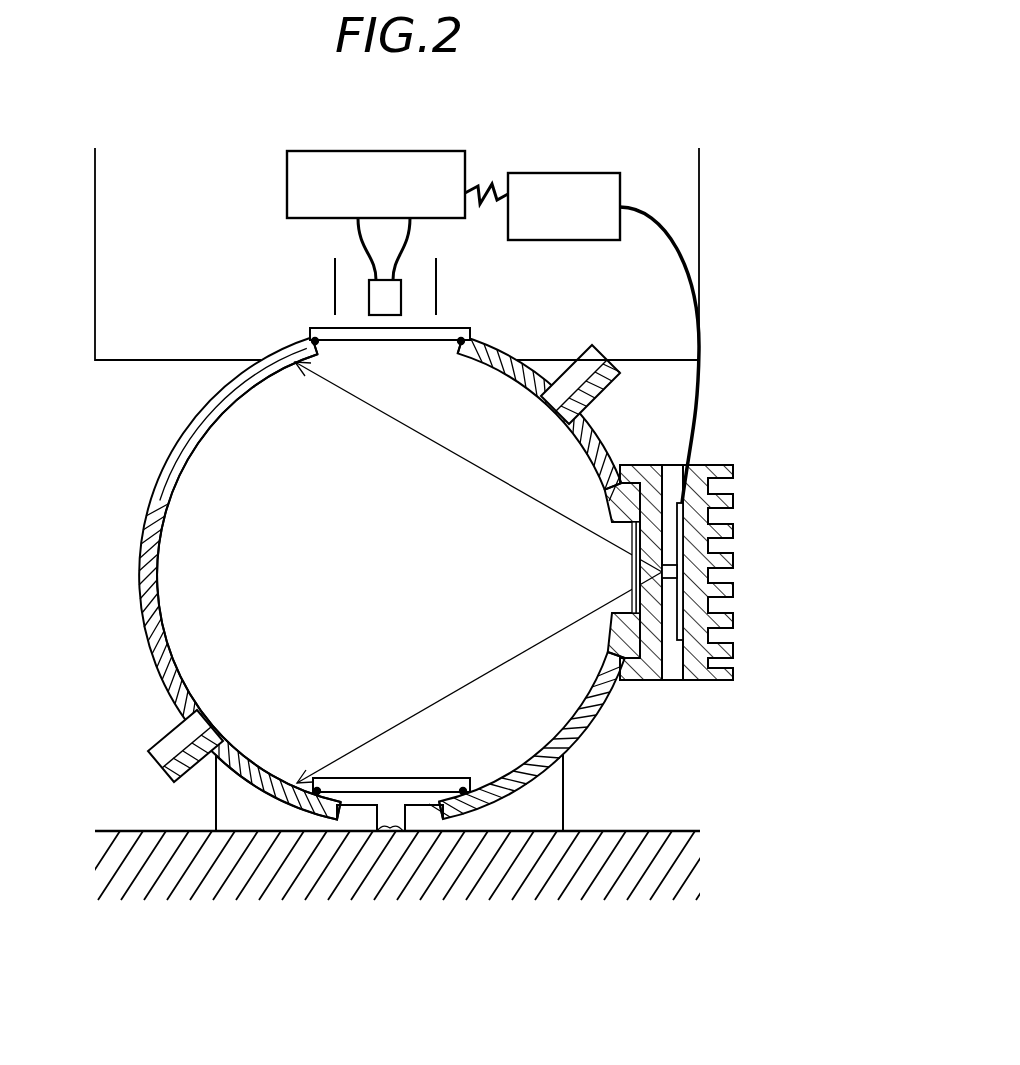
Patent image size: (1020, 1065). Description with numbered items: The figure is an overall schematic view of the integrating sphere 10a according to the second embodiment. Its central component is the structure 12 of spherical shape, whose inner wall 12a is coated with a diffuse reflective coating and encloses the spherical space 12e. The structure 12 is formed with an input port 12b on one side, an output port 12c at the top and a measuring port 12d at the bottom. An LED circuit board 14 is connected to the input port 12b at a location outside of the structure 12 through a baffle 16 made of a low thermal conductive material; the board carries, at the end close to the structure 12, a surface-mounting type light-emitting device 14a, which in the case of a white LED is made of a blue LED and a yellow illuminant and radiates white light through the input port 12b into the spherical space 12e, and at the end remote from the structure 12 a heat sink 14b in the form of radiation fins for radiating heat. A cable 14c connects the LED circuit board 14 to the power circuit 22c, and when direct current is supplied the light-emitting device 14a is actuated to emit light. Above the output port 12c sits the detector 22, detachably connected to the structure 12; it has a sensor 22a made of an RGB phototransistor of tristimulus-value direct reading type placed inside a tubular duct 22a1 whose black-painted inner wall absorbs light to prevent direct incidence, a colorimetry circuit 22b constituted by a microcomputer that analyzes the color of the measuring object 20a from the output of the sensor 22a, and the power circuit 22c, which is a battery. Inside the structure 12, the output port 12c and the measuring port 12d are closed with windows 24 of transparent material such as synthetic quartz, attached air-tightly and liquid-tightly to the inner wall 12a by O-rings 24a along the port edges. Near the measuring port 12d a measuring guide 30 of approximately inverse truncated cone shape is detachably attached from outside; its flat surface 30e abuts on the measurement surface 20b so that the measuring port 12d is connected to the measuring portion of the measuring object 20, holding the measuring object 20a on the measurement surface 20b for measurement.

The integrating sphere 10a is at (622, 422).
The structure 12 is at (150, 468).
The inner wall 12a is at (165, 575).
The input port 12b is at (620, 568).
The output port 12c is at (402, 355).
The measuring port 12d is at (425, 780).
The spherical space 12e is at (478, 572).
The LED circuit board 14 is at (680, 530).
The light-emitting device 14a is at (673, 571).
The heat sink 14b is at (700, 683).
The cable 14c is at (700, 450).
The baffle 16 is at (628, 465).
The measuring object 20 is at (408, 865).
The measuring object 20a is at (383, 833).
The measurement surface 20b is at (600, 831).
The detector 22 is at (702, 262).
The sensor 22a is at (385, 318).
The tubular duct 22a1 is at (333, 290).
The colorimetry circuit 22b is at (430, 151).
The power circuit 22c is at (558, 173).
The windows 24 is at (403, 342).
The O-rings 24a is at (318, 345).
The measuring guide 30 is at (213, 810).
The flat surface 30e is at (518, 835).